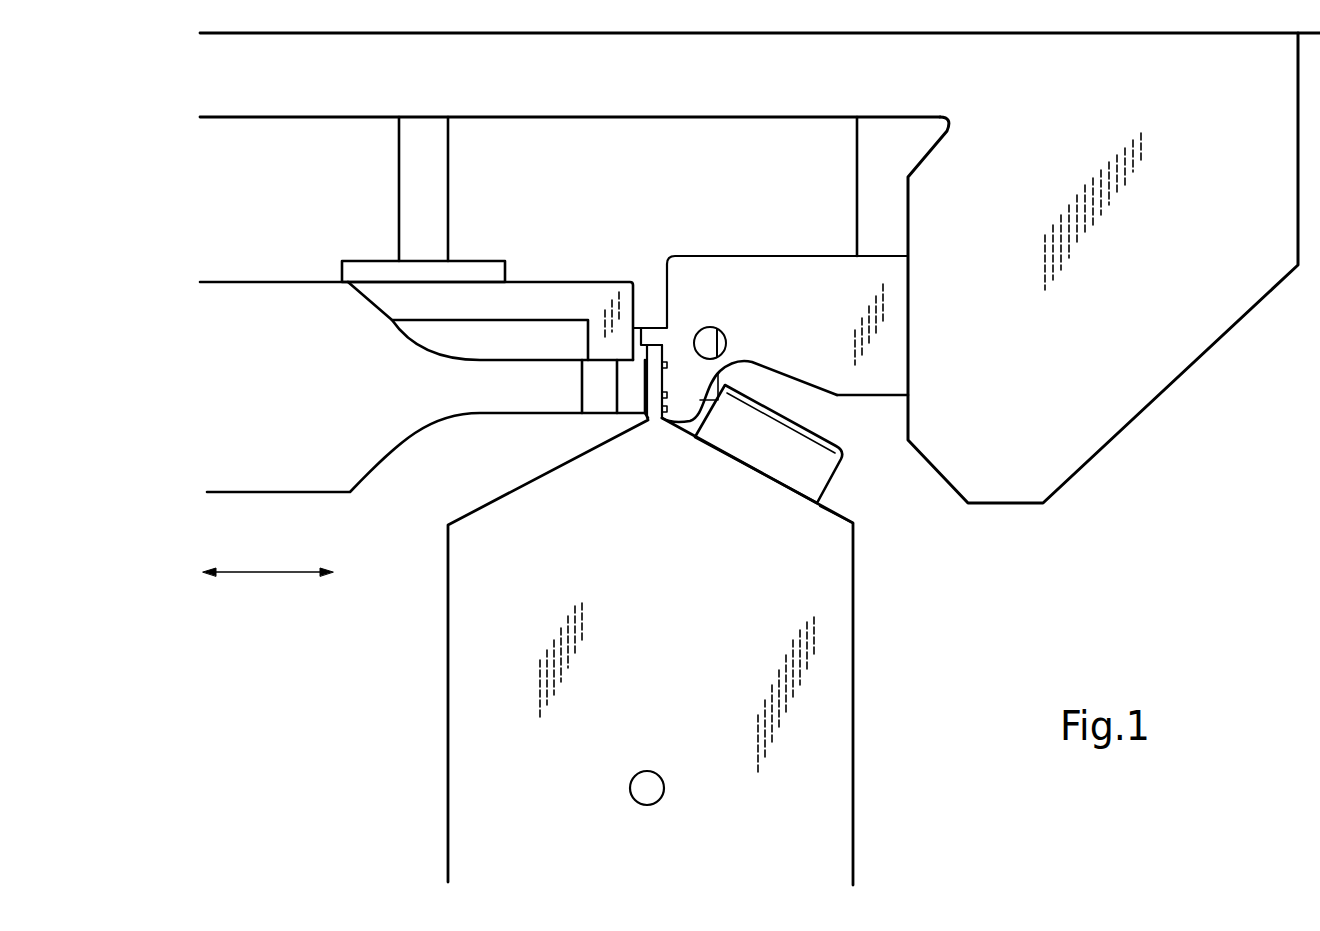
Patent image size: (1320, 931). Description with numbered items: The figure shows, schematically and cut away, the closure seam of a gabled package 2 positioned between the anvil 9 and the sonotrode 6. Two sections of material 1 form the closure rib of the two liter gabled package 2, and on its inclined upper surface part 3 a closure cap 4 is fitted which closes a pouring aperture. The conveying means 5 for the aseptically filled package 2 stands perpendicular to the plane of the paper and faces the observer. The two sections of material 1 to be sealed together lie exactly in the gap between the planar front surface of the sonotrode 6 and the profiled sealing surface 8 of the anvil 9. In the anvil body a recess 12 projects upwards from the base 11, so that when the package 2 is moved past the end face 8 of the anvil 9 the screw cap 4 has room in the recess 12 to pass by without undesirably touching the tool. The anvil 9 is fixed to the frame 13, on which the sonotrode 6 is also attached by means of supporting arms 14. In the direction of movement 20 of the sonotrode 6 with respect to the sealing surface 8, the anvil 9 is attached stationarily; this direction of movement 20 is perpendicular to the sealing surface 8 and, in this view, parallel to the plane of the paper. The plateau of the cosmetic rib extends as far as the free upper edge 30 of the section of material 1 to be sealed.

The sections of material 1 is at (652, 387).
The gabled package 2 is at (478, 647).
The inclined upper surface part 3 is at (830, 515).
The closure cap 4 is at (813, 457).
The conveying means 5 is at (642, 788).
The sonotrode 6 is at (395, 383).
The sealing surface 8 is at (667, 367).
The anvil 9 is at (823, 329).
The base 11 is at (885, 397).
The recess 12 is at (790, 378).
The frame 13 is at (1113, 347).
The supporting arms 14 is at (430, 222).
The direction of movement 20 is at (270, 572).
The free upper edge 30 is at (652, 340).